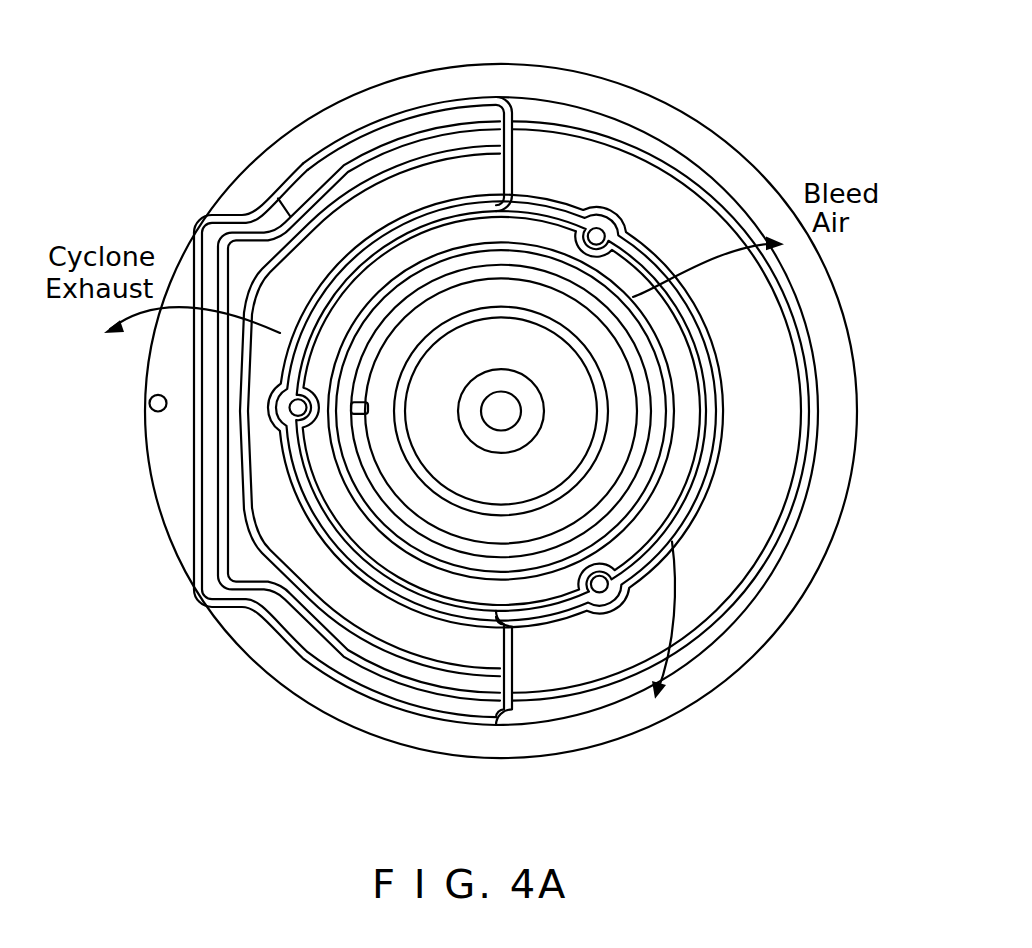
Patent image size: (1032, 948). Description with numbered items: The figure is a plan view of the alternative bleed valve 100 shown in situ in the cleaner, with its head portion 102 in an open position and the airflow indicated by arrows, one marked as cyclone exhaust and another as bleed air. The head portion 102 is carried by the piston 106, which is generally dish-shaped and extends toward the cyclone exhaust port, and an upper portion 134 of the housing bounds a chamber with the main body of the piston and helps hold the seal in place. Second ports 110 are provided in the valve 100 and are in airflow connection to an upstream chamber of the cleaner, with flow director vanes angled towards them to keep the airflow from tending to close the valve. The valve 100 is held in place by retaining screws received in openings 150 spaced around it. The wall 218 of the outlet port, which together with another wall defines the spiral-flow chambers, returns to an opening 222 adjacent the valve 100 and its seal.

The bleed valve 100 is at (275, 124).
The head portion 102 is at (563, 444).
The piston 106 is at (530, 397).
The second ports 110 is at (670, 543).
The upper portion 134 is at (622, 434).
The openings 150 is at (613, 212).
The wall 218 is at (409, 700).
The opening 222 is at (348, 605).